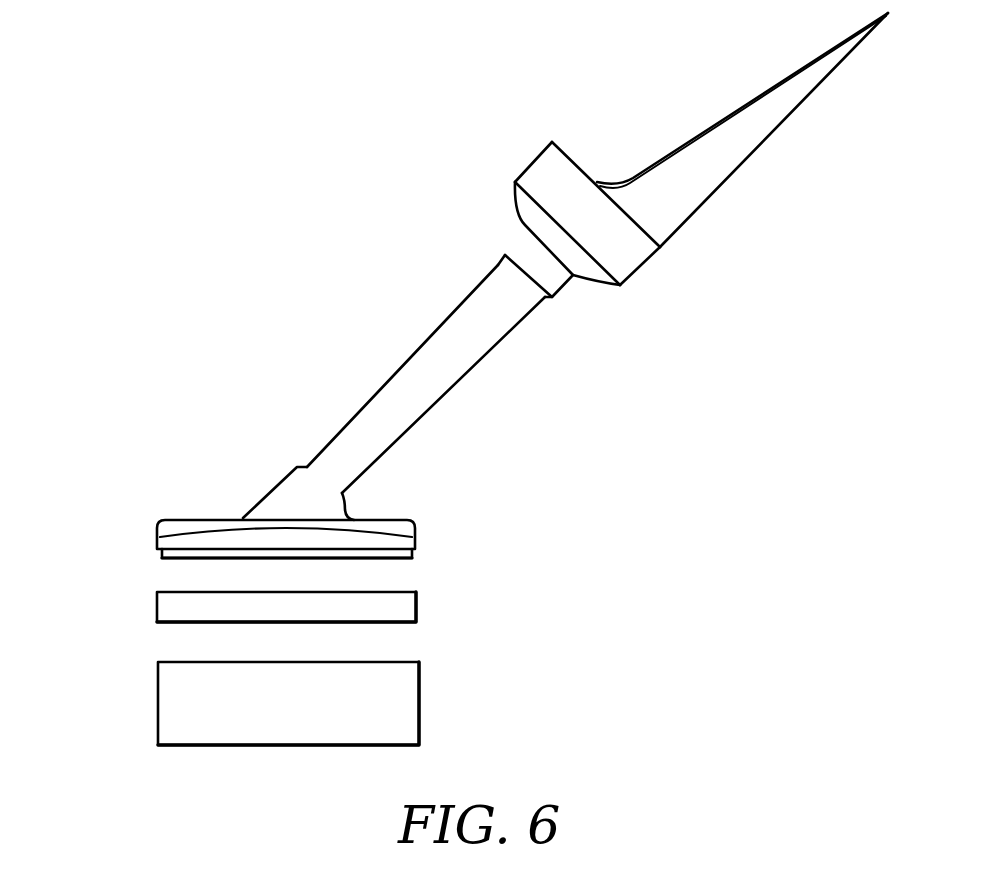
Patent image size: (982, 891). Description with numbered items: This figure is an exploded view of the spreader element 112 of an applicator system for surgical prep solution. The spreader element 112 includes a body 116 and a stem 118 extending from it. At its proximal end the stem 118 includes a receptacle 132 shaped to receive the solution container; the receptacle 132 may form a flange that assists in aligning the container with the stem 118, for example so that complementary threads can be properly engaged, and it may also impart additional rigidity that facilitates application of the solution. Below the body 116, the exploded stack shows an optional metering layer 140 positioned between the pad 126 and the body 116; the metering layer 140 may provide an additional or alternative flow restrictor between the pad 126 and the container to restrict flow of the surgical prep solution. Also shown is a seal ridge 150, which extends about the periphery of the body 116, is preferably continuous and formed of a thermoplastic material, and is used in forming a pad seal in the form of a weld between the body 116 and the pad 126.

The spreader element 112 is at (77, 377).
The body 116 is at (381, 519).
The stem 118 is at (467, 368).
The pad 126 is at (420, 708).
The receptacle 132 is at (718, 187).
The metering layer 140 is at (418, 603).
The seal ridge 150 is at (394, 558).